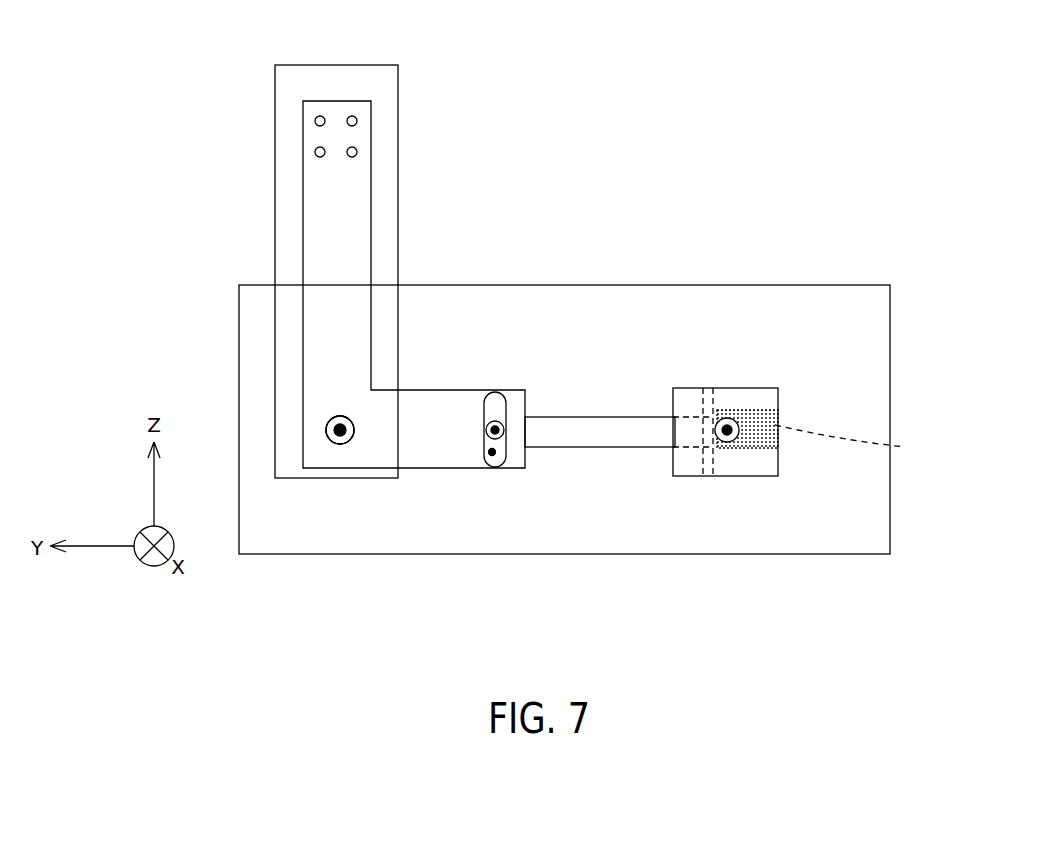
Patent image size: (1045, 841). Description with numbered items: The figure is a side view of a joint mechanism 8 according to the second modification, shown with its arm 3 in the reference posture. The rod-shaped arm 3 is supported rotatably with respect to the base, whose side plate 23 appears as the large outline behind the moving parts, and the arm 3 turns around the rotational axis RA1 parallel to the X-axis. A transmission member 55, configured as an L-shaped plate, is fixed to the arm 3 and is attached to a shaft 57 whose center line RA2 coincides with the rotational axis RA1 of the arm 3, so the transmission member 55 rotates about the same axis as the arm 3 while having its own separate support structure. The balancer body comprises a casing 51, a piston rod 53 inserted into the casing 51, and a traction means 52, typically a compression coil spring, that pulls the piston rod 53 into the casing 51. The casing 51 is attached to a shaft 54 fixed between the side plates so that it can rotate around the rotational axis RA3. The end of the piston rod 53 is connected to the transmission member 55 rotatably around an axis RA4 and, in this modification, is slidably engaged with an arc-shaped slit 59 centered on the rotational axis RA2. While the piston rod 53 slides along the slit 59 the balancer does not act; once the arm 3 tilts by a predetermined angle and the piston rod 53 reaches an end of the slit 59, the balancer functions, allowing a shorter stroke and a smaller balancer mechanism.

The arm 3 is at (355, 68).
The joint mechanism 8 is at (665, 145).
The side plate 23 is at (873, 285).
The casing 51 is at (758, 410).
The traction means 52 is at (857, 442).
The piston rod 53 is at (572, 447).
The shaft 54 is at (738, 433).
The transmission member 55 is at (303, 237).
The shaft 57 is at (333, 441).
The slit 59 is at (492, 456).
The rotational axis RA1 is at (352, 422).
The rotational axis RA2 is at (411, 333).
The rotational axis RA3 is at (725, 418).
The axis RA4 is at (500, 392).